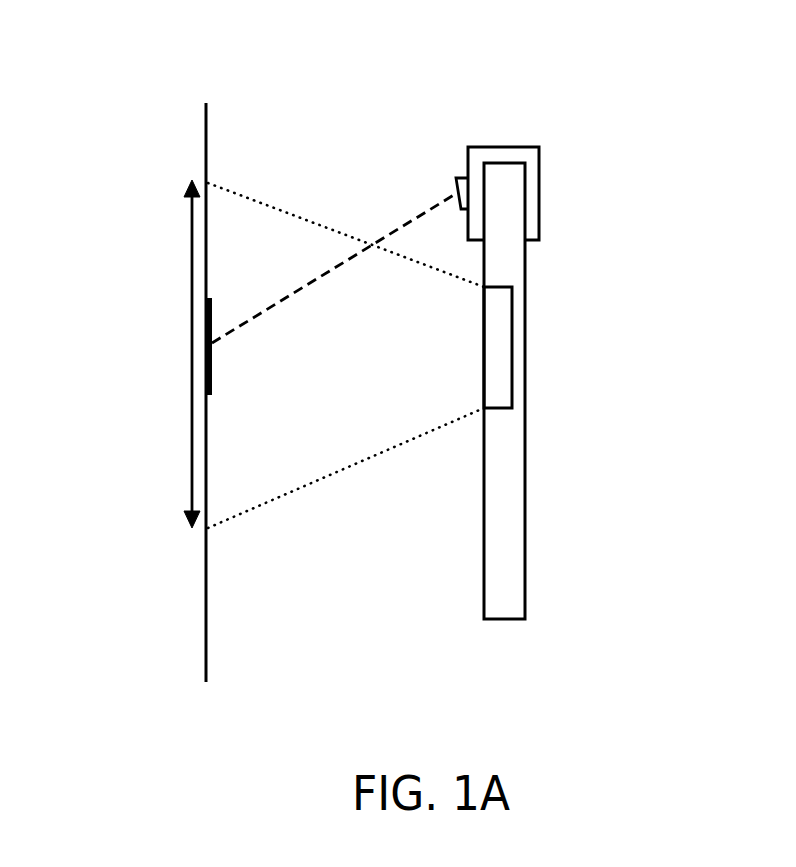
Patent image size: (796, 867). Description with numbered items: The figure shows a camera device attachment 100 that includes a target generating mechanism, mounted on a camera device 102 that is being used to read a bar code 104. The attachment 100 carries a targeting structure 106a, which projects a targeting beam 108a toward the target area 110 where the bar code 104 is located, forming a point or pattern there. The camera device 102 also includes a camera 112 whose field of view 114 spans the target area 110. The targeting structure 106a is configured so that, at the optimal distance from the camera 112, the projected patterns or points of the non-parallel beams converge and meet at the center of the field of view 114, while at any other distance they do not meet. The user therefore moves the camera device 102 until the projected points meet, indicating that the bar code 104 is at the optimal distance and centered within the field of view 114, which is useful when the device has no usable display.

The camera device attachment 100 is at (540, 200).
The camera device 102 is at (525, 507).
The bar code 104 is at (212, 358).
The targeting structure 106a is at (457, 178).
The targeting beam 108a is at (407, 225).
The target area 110 is at (208, 413).
The camera 112 is at (512, 347).
The field of view 114 is at (193, 352).